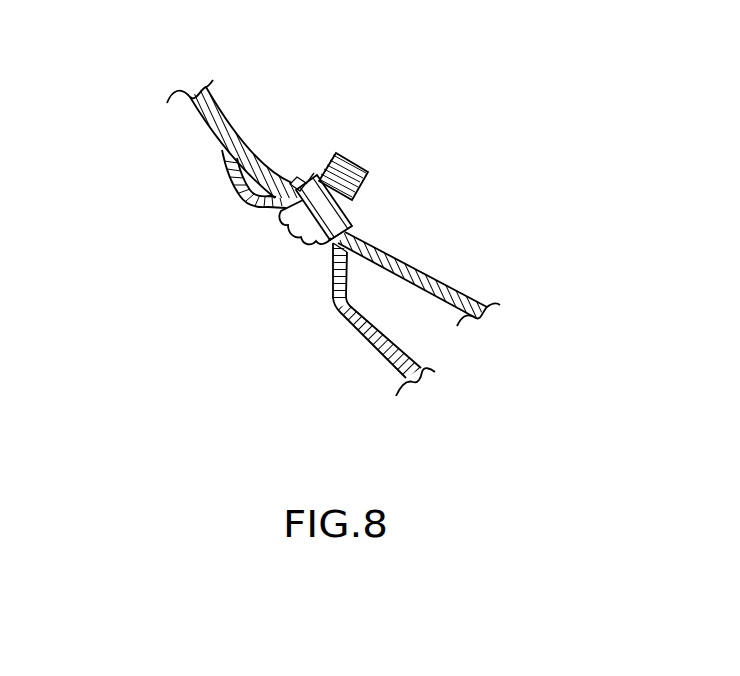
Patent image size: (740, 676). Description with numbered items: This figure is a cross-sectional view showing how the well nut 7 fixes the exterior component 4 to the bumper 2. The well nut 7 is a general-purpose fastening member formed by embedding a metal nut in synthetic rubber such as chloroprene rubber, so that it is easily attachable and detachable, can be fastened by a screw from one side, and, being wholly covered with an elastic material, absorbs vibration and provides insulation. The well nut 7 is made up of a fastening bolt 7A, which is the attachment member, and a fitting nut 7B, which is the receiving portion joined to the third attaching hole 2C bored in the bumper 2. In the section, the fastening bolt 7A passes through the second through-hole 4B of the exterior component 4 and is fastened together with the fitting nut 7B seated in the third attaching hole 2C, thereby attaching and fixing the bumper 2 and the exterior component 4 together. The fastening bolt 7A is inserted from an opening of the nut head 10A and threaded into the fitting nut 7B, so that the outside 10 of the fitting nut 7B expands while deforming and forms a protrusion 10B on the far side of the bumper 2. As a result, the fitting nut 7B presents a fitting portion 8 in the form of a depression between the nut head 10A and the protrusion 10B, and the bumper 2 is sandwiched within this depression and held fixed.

The bumper 2 is at (212, 132).
The third attaching hole 2C is at (355, 211).
The exterior component 4 is at (369, 343).
The second through-hole 4B is at (322, 247).
The well nut 7 is at (372, 164).
The fastening bolt 7A is at (298, 236).
The fitting nut 7B is at (313, 162).
The fitting portion 8 is at (352, 224).
The outside of the fitting nut 10 is at (360, 194).
The nut head 10A is at (250, 193).
The protrusion 10B is at (297, 181).